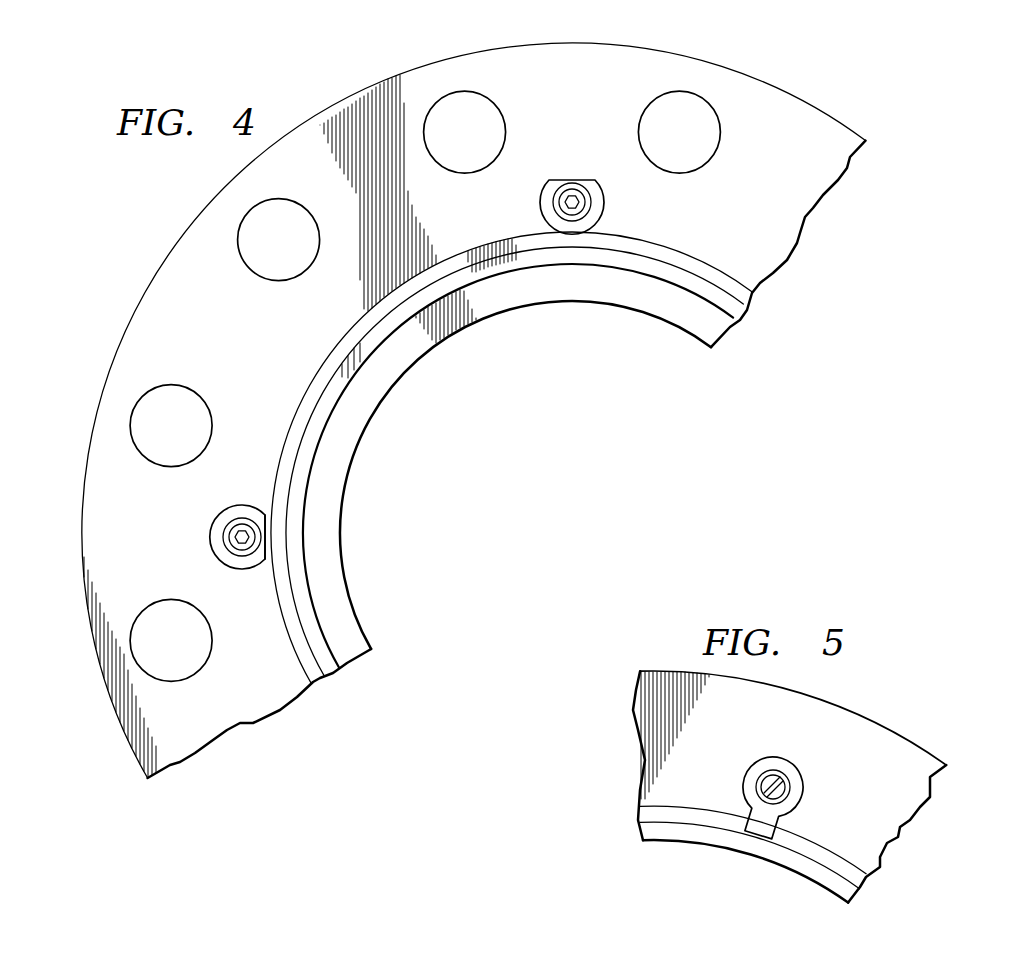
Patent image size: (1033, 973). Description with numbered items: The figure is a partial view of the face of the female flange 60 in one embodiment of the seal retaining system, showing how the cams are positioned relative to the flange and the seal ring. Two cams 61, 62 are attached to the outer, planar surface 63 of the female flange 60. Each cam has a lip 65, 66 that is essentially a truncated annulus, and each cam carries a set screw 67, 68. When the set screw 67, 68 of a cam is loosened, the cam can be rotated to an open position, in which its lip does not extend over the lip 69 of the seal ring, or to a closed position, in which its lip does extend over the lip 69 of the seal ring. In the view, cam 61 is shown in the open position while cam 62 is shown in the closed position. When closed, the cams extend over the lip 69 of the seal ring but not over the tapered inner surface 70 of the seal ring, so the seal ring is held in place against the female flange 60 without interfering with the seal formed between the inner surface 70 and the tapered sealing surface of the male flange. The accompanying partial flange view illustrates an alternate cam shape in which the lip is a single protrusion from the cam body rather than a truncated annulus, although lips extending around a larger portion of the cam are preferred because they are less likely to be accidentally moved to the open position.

The female flange 60 is at (374, 70).
The cam 61 is at (275, 556).
The cam 62 is at (571, 236).
The outer planar surface 63 is at (808, 200).
The lip of cam 65 is at (243, 508).
The lip of cam 66 is at (603, 206).
The set screw 67 is at (232, 535).
The set screw 68 is at (571, 200).
The lip of seal ring 69 is at (311, 678).
The tapered inner surface 70 is at (330, 662).